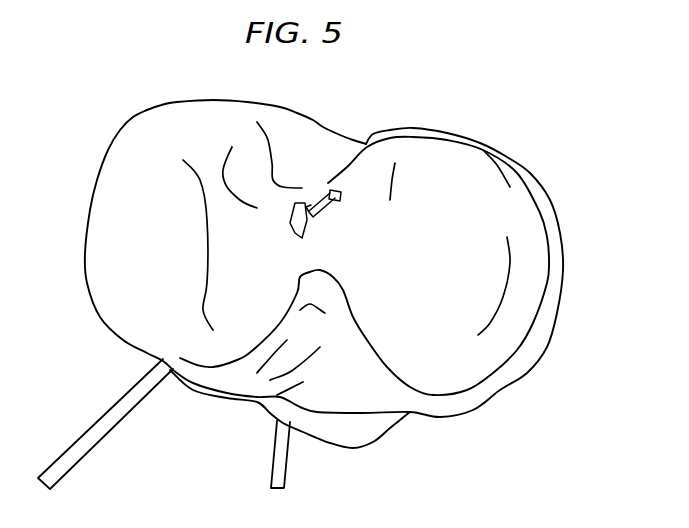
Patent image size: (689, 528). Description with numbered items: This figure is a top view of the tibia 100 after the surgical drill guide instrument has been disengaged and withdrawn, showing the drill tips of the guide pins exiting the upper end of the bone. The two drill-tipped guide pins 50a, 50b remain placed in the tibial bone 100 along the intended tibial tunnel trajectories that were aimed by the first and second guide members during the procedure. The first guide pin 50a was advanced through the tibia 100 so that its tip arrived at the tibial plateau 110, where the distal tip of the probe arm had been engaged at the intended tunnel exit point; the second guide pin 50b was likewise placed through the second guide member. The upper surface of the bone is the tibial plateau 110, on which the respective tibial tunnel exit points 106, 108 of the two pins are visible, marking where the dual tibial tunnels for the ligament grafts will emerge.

The tibia 100 is at (550, 140).
The tibial plateau 110 is at (170, 120).
The tibial tunnel exit point 106 is at (341, 201).
The tibial tunnel exit point 108 is at (292, 218).
The first guide pin 50a is at (85, 430).
The second guide pin 50b is at (270, 478).